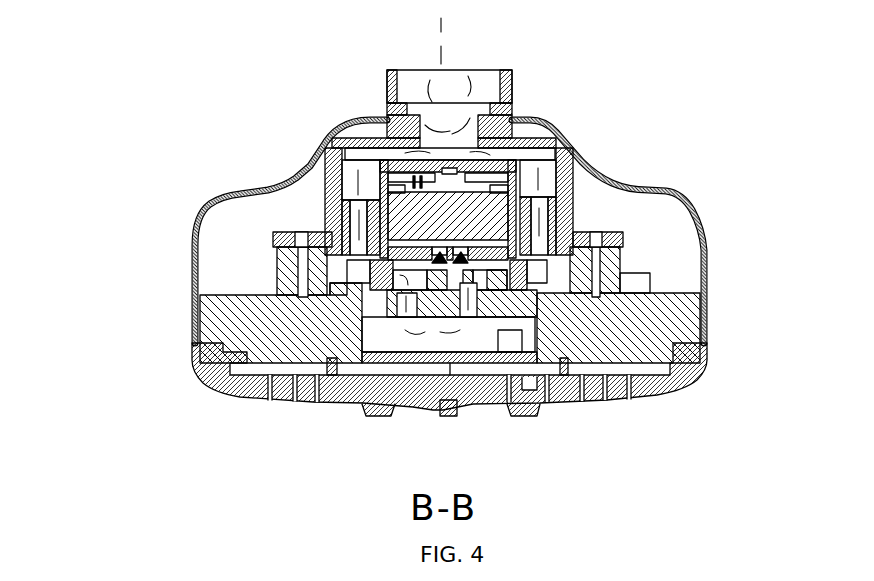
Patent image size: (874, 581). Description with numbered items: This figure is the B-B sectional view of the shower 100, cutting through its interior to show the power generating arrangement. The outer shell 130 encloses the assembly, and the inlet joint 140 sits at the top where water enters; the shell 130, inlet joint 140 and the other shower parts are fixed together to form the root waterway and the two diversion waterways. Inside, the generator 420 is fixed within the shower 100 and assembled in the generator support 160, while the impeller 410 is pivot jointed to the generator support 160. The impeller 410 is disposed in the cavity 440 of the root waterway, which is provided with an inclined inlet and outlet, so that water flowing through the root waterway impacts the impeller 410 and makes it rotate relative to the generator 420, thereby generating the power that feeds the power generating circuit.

The shower 100 is at (160, 245).
The shell 130 is at (290, 183).
The inlet joint 140 is at (410, 88).
The generator support 160 is at (455, 283).
The impeller 410 is at (430, 290).
The generator 420 is at (466, 211).
The cavity 440 is at (390, 265).